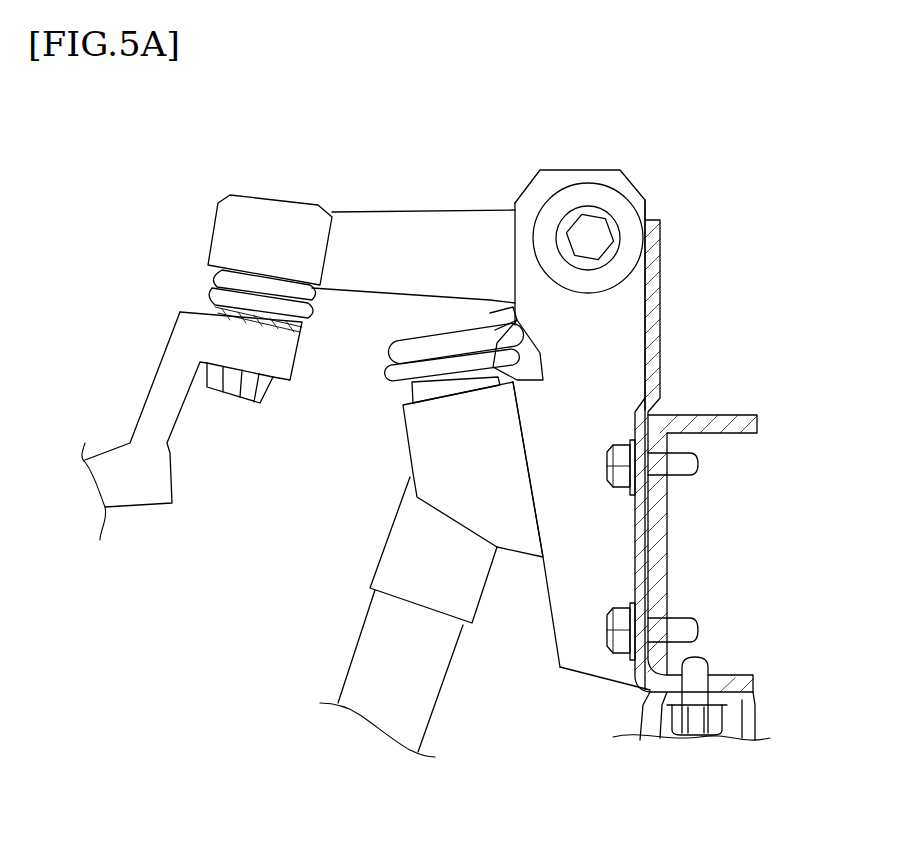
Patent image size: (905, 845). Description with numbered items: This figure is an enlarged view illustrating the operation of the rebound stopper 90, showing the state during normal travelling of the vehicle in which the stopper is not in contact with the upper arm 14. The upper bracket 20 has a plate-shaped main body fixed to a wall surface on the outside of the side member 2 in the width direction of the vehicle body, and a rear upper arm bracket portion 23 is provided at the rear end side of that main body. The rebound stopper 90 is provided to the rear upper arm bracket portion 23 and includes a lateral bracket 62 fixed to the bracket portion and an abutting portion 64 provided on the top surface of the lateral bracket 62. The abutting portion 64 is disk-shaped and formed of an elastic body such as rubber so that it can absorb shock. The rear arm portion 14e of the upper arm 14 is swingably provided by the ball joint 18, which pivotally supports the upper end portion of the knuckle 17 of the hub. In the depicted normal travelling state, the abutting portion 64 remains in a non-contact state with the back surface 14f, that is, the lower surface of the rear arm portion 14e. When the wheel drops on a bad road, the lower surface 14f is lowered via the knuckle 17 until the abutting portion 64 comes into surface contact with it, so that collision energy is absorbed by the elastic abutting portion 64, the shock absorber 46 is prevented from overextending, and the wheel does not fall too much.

The side member 2 is at (713, 423).
The upper arm 14 is at (498, 185).
The rear arm portion 14e is at (410, 222).
The back surface 14f is at (387, 298).
The knuckle 17 is at (183, 358).
The ball joint 18 is at (250, 220).
The upper bracket 20 is at (682, 270).
The rear upper arm bracket portion 23 is at (587, 363).
The shock absorber 46 is at (395, 640).
The lateral bracket 62 is at (430, 440).
The abutting portion 64 is at (443, 340).
The rebound stopper 90 is at (383, 400).